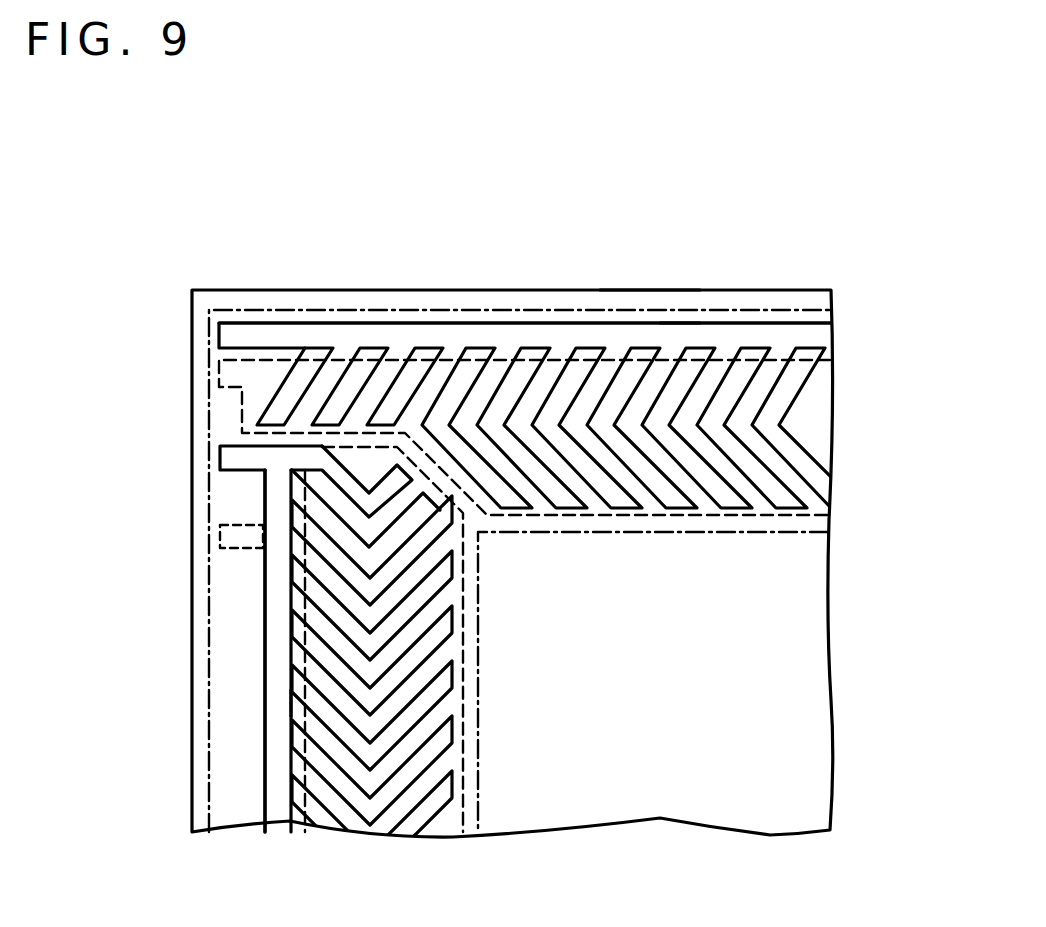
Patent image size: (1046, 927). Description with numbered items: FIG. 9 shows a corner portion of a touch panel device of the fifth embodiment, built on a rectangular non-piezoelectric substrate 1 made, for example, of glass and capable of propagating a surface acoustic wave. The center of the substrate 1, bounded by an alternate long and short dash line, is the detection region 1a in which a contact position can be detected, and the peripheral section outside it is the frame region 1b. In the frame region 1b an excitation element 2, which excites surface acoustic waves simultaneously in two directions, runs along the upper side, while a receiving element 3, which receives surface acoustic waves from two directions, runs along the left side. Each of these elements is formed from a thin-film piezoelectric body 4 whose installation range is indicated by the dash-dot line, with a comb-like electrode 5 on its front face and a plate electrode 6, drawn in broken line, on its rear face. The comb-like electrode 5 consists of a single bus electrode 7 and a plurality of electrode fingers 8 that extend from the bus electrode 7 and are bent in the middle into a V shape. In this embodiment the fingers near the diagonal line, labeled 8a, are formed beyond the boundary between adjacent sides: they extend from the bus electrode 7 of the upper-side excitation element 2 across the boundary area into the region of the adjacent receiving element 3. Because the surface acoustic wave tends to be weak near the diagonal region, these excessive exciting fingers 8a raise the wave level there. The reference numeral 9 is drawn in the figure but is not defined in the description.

The non-piezoelectric substrate 1 is at (798, 290).
The detection region 1a is at (713, 535).
The frame region 1b is at (638, 300).
The excitation element 2 is at (681, 333).
The receiving element 3 is at (291, 703).
The piezoelectric body 4 is at (236, 310).
The comb-like electrode 5 is at (513, 333).
The plate electrode 6 is at (763, 515).
The bus electrode 7 is at (575, 332).
The electrode fingers 8 is at (501, 529).
The electrode fingers extended across the boundary 8a is at (303, 372).
The connecting portion 9 is at (222, 455).